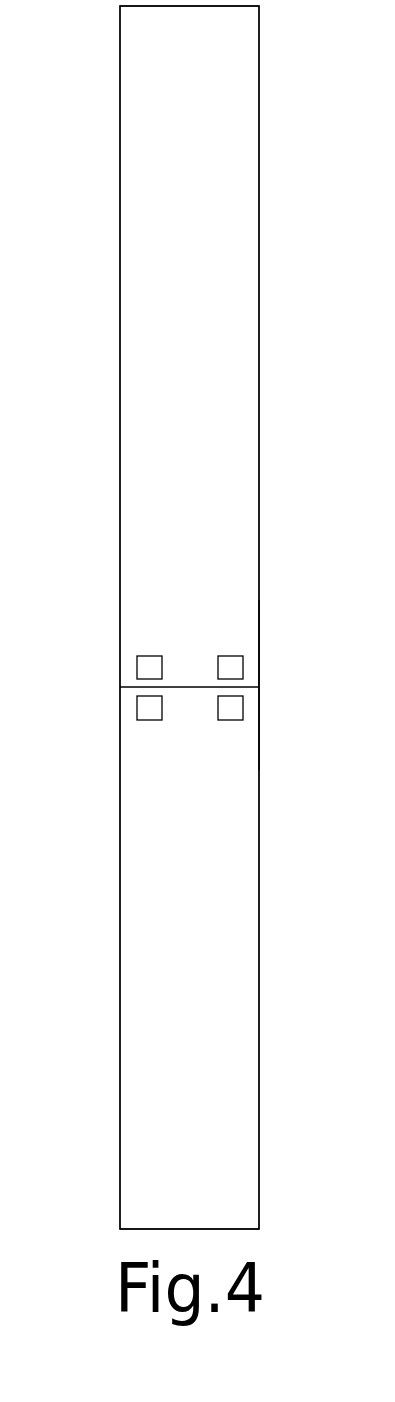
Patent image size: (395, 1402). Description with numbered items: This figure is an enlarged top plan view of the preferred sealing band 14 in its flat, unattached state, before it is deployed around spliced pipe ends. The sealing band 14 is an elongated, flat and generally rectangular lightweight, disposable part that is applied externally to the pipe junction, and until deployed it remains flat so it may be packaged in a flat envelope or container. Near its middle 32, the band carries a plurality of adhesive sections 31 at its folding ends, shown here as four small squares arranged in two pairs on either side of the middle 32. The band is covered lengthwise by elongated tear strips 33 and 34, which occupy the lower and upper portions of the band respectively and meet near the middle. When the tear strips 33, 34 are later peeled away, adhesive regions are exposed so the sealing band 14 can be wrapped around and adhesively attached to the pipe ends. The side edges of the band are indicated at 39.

The sealing band 14 is at (111, 233).
The adhesive sections 31 is at (147, 642).
The middle 32 is at (272, 683).
The tear strip 33 is at (221, 838).
The tear strip 34 is at (212, 368).
The side edges 39 is at (292, 599).